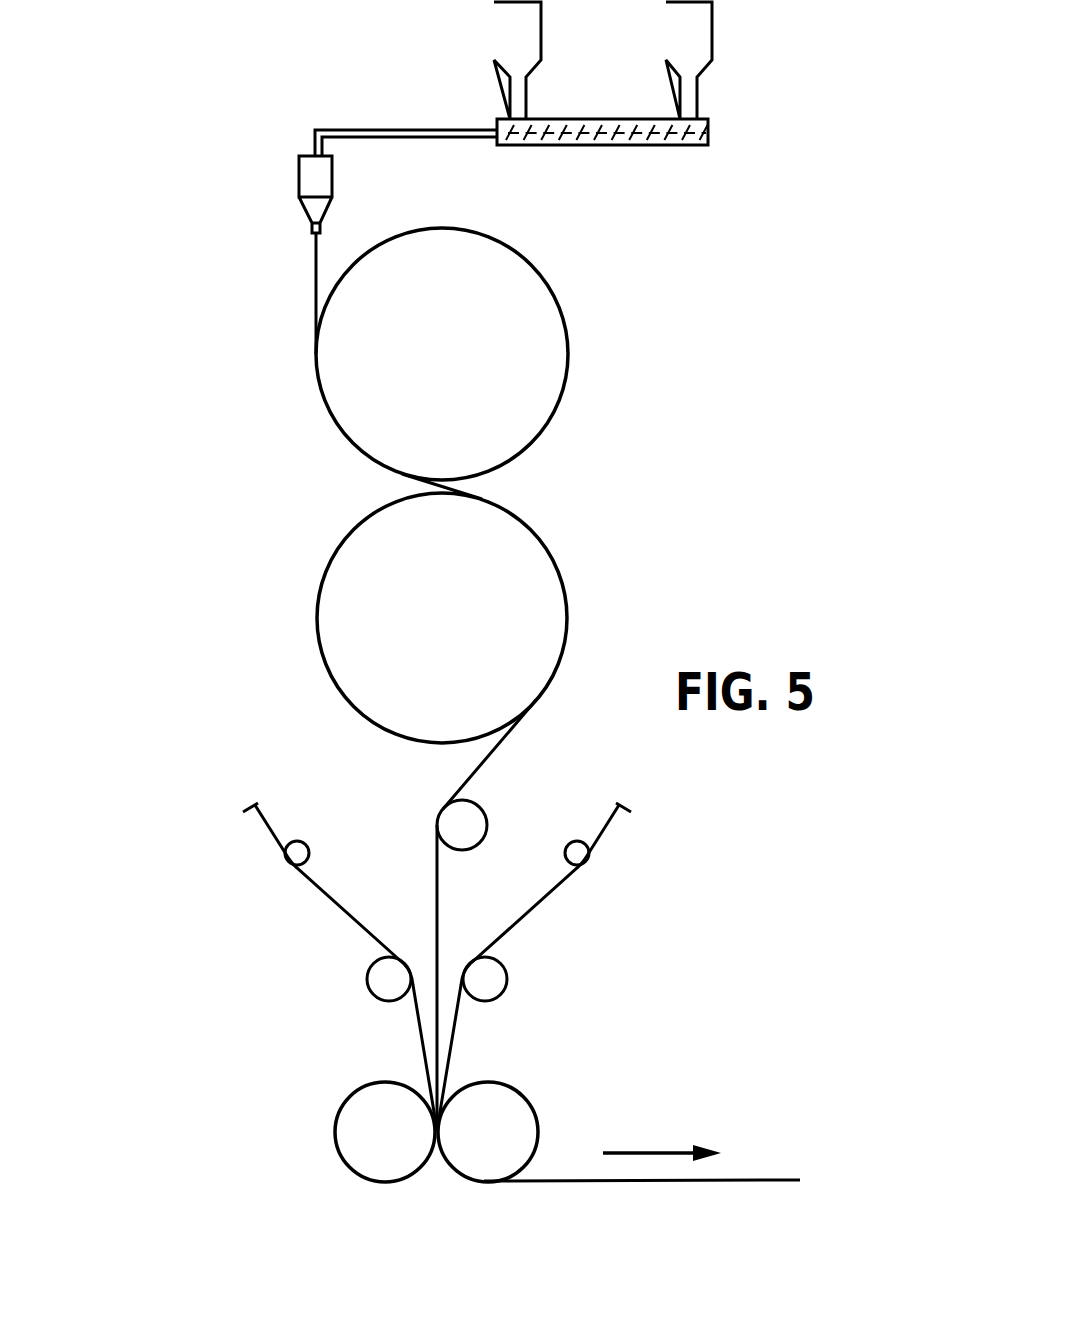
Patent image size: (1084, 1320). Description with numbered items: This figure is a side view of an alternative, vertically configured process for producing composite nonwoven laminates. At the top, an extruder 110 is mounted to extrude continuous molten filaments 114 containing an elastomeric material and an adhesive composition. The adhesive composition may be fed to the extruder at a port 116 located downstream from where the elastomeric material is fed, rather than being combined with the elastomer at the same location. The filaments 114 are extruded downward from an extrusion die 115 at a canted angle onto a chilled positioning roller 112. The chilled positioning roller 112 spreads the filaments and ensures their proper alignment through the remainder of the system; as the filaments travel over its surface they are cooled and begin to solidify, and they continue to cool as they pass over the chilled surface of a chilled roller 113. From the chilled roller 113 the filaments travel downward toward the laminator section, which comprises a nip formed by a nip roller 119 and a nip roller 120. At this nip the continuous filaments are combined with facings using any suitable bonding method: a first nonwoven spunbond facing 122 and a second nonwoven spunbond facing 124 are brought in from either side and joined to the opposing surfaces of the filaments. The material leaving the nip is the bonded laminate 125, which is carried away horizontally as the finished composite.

The extruder 110 is at (698, 40).
The chilled positioning roller 112 is at (540, 353).
The chilled roller 113 is at (547, 622).
The continuous molten filaments 114 is at (312, 258).
The extrusion die 115 is at (262, 134).
The port 116 is at (528, 40).
The nip roller 119 is at (340, 1138).
The nip roller 120 is at (518, 1127).
The first nonwoven spunbond facing 122 is at (417, 1023).
The second nonwoven spunbond facing 124 is at (560, 887).
The bonded laminate 125 is at (688, 1181).